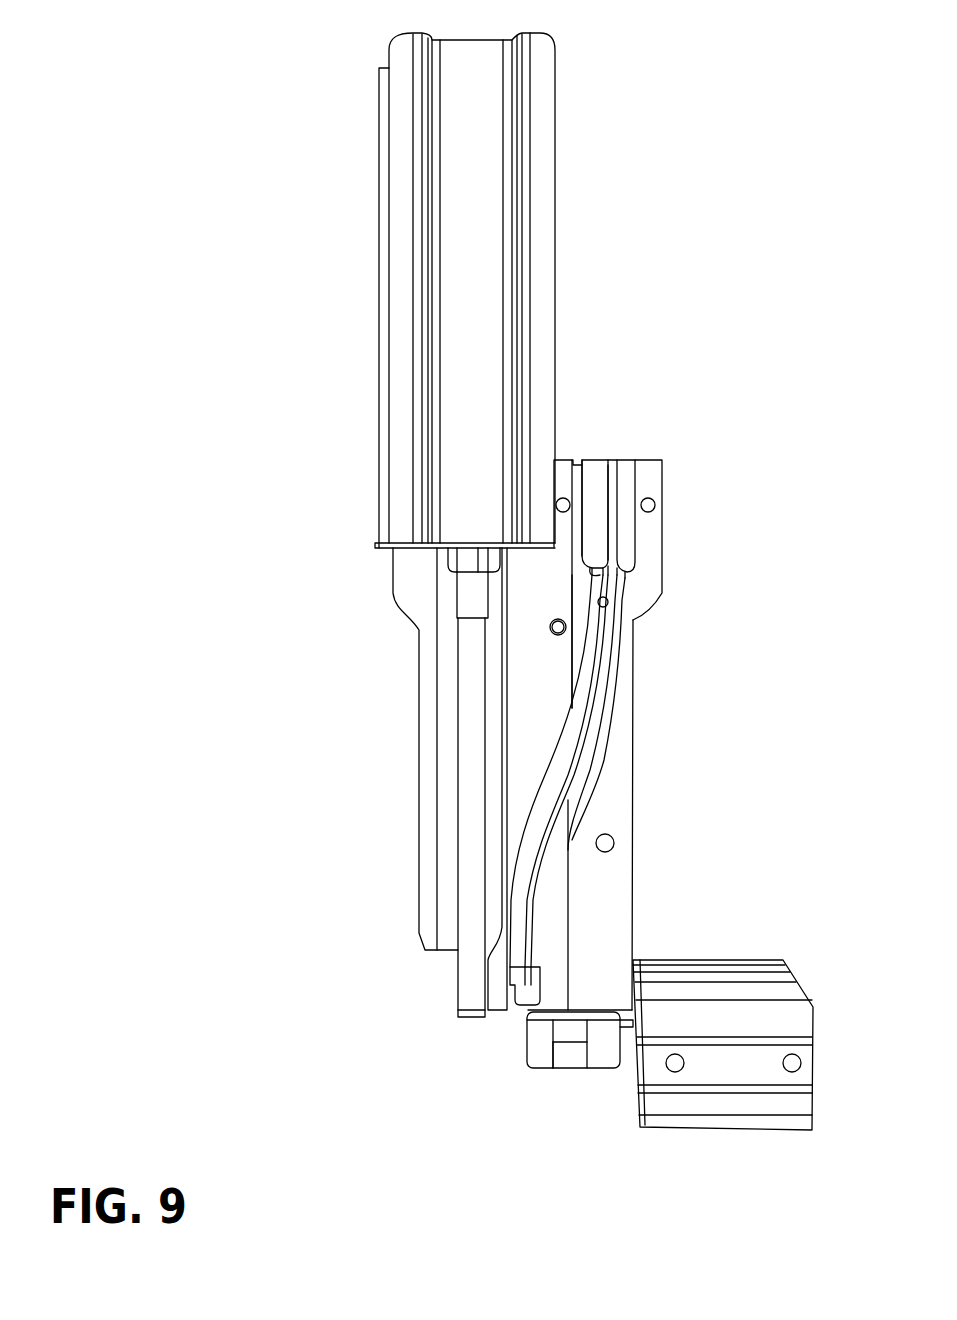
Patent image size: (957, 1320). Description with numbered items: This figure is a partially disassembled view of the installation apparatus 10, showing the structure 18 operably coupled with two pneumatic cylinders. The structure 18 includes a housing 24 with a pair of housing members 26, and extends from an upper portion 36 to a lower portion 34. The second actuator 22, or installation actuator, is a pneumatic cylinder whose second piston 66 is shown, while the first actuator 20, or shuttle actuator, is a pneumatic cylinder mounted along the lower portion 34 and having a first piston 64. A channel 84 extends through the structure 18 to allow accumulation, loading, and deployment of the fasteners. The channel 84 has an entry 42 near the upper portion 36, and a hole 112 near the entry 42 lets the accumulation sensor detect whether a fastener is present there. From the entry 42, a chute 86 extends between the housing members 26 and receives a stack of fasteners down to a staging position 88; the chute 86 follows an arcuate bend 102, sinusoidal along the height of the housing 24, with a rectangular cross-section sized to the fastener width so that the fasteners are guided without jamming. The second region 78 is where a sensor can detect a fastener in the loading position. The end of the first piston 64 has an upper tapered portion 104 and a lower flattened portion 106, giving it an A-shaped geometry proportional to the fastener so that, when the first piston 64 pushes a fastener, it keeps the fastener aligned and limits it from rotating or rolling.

The installation apparatus 10 is at (683, 242).
The second actuator 22 is at (379, 222).
The hole 112 is at (600, 572).
The entry 42 is at (598, 505).
The upper portion 36 is at (684, 501).
The second region 78 is at (608, 603).
The structure 18 is at (685, 611).
The second piston 66 is at (470, 675).
The channel 84 is at (614, 704).
The housing 24 is at (415, 773).
The housing members 26 is at (618, 757).
The arcuate bend 102 is at (580, 777).
The chute 86 is at (537, 912).
The upper tapered portion 104 is at (565, 1032).
The first actuator 20 is at (808, 998).
The lower portion 34 is at (438, 1017).
The staging position 88 is at (520, 1046).
The lower flattened portion 106 is at (540, 1056).
The first piston 64 is at (573, 1058).